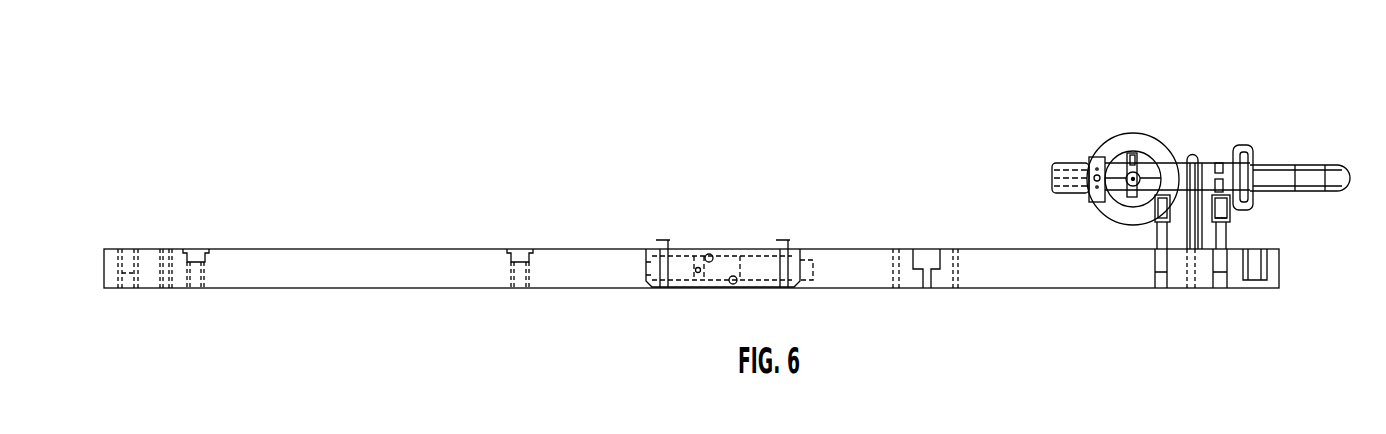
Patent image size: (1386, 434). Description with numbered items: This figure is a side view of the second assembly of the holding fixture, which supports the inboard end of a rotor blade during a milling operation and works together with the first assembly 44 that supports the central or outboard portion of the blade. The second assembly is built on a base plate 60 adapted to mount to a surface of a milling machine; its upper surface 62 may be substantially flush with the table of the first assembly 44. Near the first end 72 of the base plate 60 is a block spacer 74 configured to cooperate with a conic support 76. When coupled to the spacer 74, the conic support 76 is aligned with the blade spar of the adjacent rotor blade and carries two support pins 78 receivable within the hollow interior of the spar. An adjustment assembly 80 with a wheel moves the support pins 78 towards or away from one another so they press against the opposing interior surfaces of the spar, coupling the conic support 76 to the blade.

The first assembly 44 is at (383, 75).
The base plate 60 is at (426, 268).
The upper surface 62 is at (847, 247).
The first end 72 is at (1277, 272).
The block spacer 74 is at (1200, 228).
The conic support 76 is at (1268, 177).
The support pin 78 is at (1052, 172).
The adjustment assembly 80 is at (1133, 140).